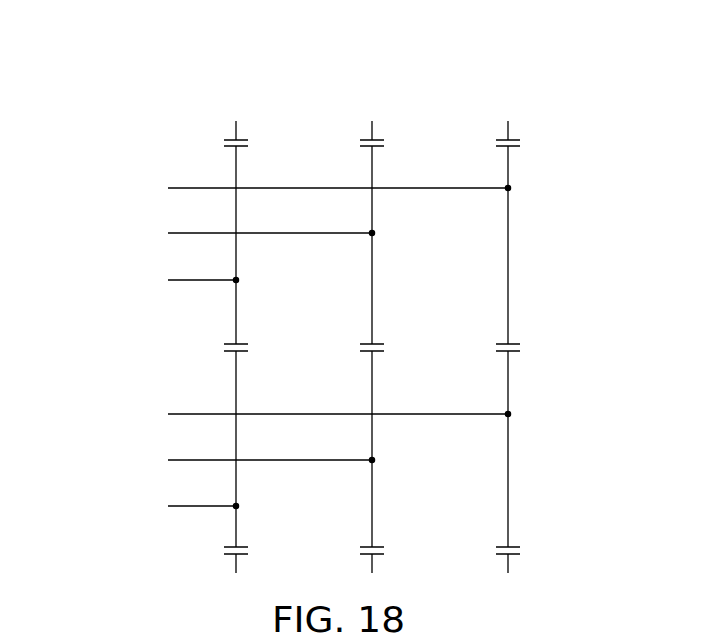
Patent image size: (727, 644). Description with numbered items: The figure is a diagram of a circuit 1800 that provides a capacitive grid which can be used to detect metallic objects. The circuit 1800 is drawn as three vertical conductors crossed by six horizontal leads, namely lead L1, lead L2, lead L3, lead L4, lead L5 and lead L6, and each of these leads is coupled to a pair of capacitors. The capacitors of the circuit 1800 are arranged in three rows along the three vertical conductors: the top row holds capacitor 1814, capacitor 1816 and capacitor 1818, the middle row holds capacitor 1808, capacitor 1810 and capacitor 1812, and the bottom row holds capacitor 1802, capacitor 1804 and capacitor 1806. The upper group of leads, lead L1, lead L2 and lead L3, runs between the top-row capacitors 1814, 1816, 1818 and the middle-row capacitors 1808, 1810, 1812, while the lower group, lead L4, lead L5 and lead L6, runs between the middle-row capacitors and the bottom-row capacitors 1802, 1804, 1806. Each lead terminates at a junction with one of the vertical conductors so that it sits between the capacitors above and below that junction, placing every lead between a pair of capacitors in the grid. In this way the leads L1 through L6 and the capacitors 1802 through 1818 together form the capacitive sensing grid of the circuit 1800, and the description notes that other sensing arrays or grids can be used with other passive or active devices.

The circuit 1800 is at (108, 80).
The capacitor 1802 is at (223, 552).
The capacitor 1804 is at (360, 552).
The capacitor 1806 is at (520, 552).
The capacitor 1808 is at (223, 347).
The capacitor 1810 is at (360, 347).
The capacitor 1812 is at (520, 348).
The capacitor 1814 is at (223, 143).
The capacitor 1816 is at (360, 143).
The capacitor 1818 is at (520, 143).
The lead L1 is at (325, 188).
The lead L2 is at (257, 233).
The lead L3 is at (189, 280).
The lead L4 is at (325, 414).
The lead L5 is at (257, 460).
The lead L6 is at (189, 506).